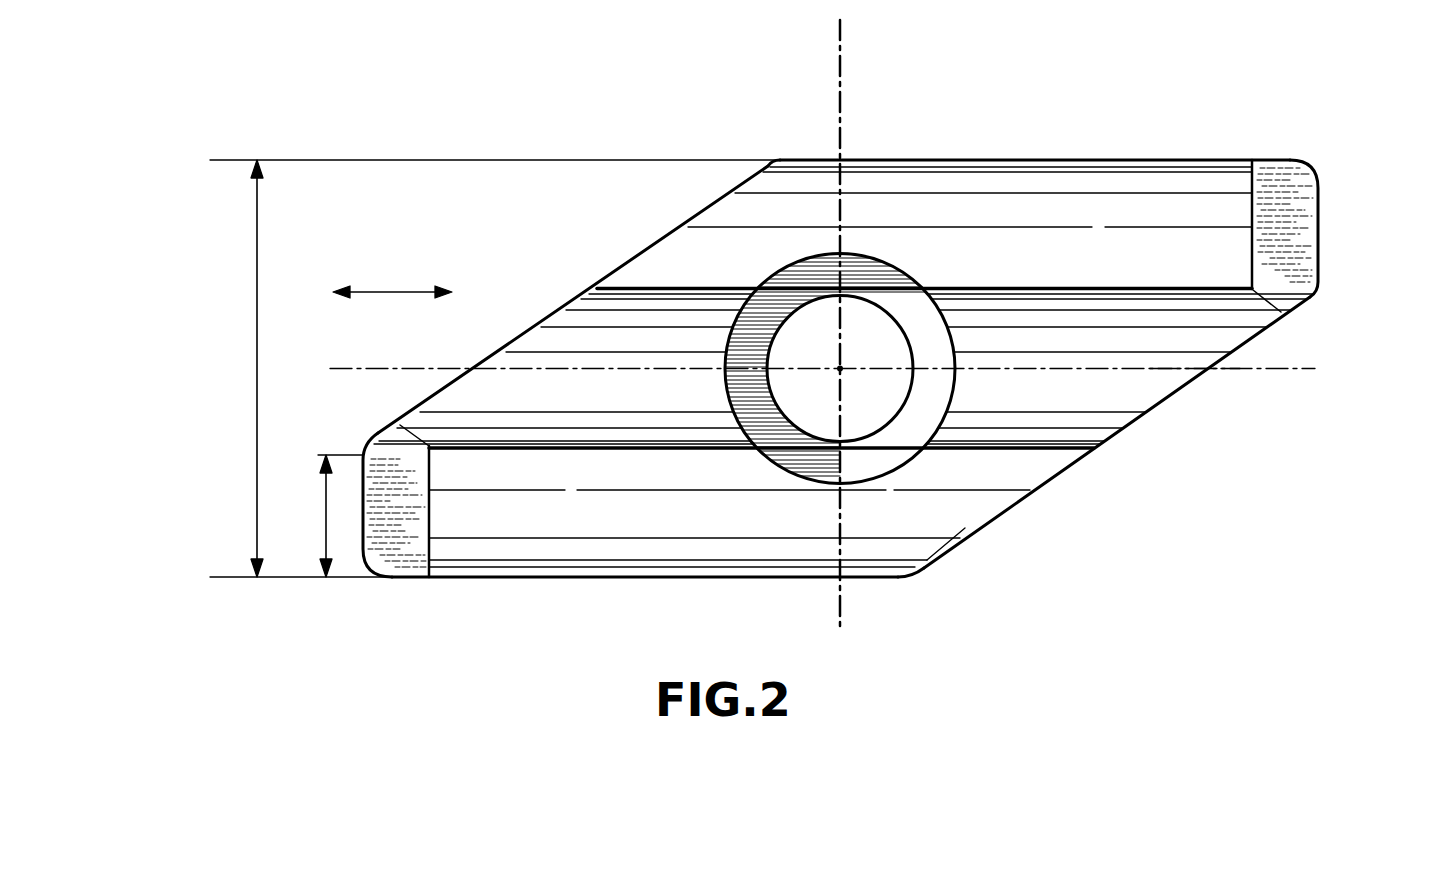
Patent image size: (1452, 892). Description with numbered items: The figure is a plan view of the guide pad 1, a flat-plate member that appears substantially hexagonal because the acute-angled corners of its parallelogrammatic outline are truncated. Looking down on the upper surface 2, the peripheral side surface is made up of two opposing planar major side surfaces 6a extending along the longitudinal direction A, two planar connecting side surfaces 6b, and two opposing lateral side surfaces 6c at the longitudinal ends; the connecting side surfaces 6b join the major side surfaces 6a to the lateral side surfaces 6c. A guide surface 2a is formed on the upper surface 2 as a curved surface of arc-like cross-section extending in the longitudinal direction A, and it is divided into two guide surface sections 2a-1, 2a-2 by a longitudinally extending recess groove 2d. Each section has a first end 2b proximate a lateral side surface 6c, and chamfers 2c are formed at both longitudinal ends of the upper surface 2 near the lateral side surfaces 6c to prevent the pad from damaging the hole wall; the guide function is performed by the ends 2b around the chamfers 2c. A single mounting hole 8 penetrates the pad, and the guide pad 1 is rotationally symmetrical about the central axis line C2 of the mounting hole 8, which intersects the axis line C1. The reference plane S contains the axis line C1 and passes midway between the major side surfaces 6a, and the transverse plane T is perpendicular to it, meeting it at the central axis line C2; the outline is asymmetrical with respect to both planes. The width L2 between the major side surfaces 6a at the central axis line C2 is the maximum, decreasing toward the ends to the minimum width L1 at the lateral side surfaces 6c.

The guide pad 1 is at (1190, 75).
The upper surface 2 is at (1064, 178).
The guide surface 2a is at (968, 205).
The guide surface section 2a-1 is at (768, 545).
The guide surface section 2a-2 is at (1003, 203).
The first end 2b is at (1232, 189).
The chamfer 2c is at (1303, 237).
The recess groove 2d is at (1133, 397).
The major side surface 6a is at (889, 159).
The connecting side surface 6b is at (627, 262).
The lateral side surface 6c is at (1324, 196).
The mounting hole 8 is at (815, 296).
The transverse plane T is at (838, 108).
The axis line C1 is at (1305, 370).
The central axis line C2 is at (838, 369).
The reference plane S is at (1222, 370).
The longitudinal direction A is at (392, 281).
The width L1 is at (327, 516).
The width L2 is at (495, 368).